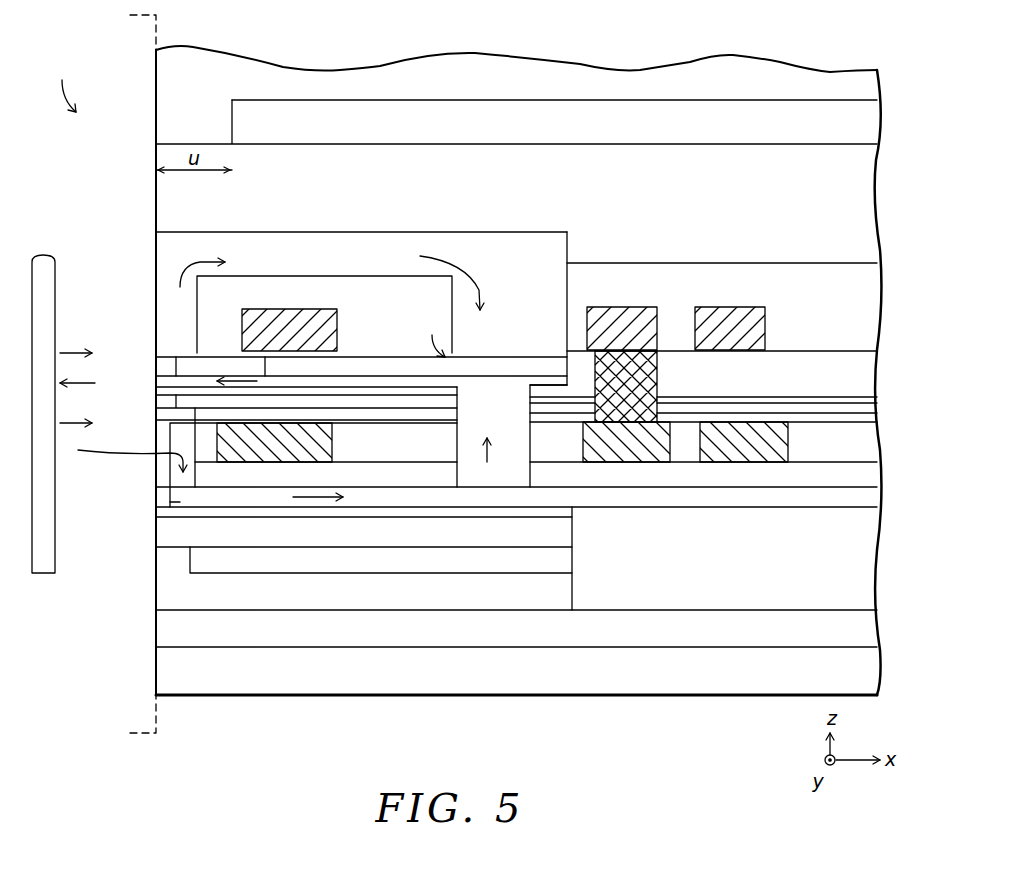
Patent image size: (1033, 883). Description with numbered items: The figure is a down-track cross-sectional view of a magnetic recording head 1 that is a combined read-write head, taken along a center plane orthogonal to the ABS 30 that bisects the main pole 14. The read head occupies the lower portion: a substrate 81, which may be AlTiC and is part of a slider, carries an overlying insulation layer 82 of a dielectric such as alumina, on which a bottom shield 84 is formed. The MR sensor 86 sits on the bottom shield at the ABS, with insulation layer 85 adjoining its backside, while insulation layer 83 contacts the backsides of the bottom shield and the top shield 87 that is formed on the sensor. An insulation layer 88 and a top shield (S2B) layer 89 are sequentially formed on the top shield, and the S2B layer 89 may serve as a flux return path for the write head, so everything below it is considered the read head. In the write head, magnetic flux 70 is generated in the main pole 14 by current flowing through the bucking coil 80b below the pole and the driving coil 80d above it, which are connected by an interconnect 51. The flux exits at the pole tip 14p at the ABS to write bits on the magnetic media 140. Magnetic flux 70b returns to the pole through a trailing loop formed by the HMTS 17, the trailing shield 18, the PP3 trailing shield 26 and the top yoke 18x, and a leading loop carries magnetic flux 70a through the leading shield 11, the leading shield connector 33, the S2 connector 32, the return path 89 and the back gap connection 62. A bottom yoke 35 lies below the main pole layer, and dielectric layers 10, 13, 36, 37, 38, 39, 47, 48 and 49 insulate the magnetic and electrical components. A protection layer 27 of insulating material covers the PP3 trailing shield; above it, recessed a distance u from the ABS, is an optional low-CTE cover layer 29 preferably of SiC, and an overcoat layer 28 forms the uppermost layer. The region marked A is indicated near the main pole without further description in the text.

The magnetic recording head 1 is at (64, 83).
The dielectric layer 10 is at (870, 472).
The leading shield 11 is at (163, 401).
The dielectric layer 13 is at (163, 392).
The main pole 14 is at (525, 383).
The pole tip 14p is at (160, 378).
The HMTS 17 is at (180, 377).
The trailing shield 18 is at (186, 359).
The top yoke 18x is at (503, 368).
The PP3 trailing shield 26 is at (165, 256).
The protection layer 27 is at (165, 208).
The overcoat layer 28 is at (165, 101).
The cover layer 29 is at (868, 115).
The ABS 30 is at (128, 374).
The S2 connector 32 is at (157, 434).
The leading shield connector 33 is at (167, 415).
The bottom yoke 35 is at (390, 393).
The dielectric layer 36 is at (872, 497).
The dielectric layer 37 is at (870, 446).
The dielectric layer 38 is at (870, 416).
The dielectric layer 39 is at (870, 398).
The dielectric layer 47 is at (190, 355).
The dielectric layer 48 is at (213, 305).
The dielectric layer 49 is at (207, 353).
The interconnect 51 is at (657, 367).
The back gap connection 62 is at (505, 472).
The magnetic flux 70 is at (281, 718).
The magnetic flux (leading return) 70a is at (313, 718).
The magnetic flux (trailing return) 70b is at (270, 293).
The bucking coil 80b is at (238, 450).
The driving coil 80d is at (268, 317).
The substrate 81 is at (168, 666).
The insulation layer 82 is at (168, 626).
The insulation layer 83 is at (870, 530).
The bottom shield 84 is at (170, 587).
The insulation layer 85 is at (540, 563).
The MR sensor 86 is at (170, 558).
The top shield 87 is at (167, 532).
The insulation layer 88 is at (167, 513).
The top shield (S2B) layer 89 is at (180, 502).
The magnetic media 140 is at (42, 566).
The region A is at (434, 334).